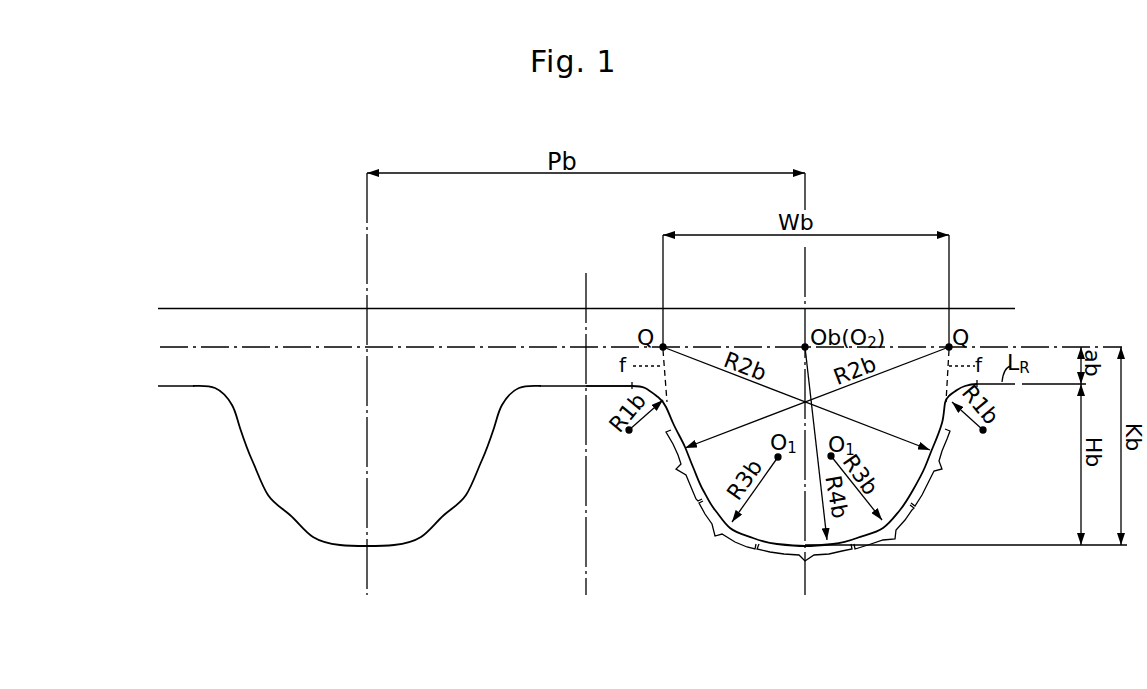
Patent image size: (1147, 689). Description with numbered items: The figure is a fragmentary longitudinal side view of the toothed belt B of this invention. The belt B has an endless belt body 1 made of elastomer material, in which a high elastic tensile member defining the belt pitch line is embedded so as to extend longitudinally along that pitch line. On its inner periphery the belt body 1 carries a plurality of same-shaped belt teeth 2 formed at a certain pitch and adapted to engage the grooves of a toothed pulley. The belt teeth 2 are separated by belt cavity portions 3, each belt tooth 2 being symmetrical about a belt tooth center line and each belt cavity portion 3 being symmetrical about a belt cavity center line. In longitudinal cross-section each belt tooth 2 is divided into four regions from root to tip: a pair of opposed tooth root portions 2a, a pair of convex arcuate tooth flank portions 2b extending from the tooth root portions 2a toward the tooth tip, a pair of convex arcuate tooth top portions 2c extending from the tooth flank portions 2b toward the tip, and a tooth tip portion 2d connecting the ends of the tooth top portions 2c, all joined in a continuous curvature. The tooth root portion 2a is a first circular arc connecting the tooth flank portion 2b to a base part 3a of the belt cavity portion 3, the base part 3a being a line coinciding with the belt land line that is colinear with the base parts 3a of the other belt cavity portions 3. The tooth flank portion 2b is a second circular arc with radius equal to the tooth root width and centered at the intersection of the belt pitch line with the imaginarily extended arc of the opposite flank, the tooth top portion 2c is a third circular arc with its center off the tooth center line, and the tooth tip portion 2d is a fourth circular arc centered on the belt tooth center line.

The toothed belt B is at (283, 141).
The belt body 1 is at (248, 305).
The belt tooth 2 is at (311, 540).
The tooth root portion 2a is at (660, 408).
The tooth flank portion 2b is at (807, 467).
The tooth top portion 2c is at (813, 529).
The tooth tip portion 2d is at (804, 565).
The belt cavity portion 3 is at (188, 390).
The base part 3a is at (568, 389).